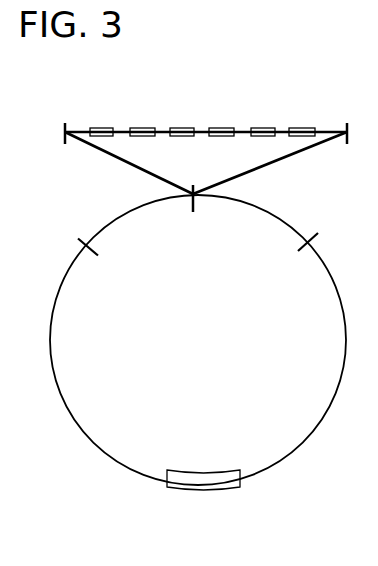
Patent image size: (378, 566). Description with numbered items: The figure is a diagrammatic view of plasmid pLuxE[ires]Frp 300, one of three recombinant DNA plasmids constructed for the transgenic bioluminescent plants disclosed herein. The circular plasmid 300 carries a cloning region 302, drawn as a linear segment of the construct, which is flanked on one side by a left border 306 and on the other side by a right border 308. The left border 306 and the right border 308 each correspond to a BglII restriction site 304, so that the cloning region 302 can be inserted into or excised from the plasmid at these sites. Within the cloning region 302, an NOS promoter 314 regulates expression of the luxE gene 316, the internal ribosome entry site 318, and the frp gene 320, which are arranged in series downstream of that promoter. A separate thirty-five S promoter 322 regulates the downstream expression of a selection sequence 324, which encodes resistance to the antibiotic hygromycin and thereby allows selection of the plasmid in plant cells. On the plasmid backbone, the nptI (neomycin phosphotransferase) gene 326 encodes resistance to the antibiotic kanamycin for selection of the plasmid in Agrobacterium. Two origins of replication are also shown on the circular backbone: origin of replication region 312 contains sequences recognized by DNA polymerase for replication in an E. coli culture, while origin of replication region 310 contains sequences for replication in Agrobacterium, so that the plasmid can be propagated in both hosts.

The plasmid pLuxE[ires]Frp 300 is at (77, 425).
The cloning region 302 is at (176, 96).
The BglII restriction site 304 is at (192, 198).
The left border 306 is at (63, 131).
The right border 308 is at (351, 127).
The origin of replication region 310 is at (88, 250).
The origin of replication region 312 is at (307, 247).
The NOS promoter 314 is at (299, 127).
The luxE gene 316 is at (260, 127).
The internal ribosome entry site 318 is at (222, 127).
The frp gene 320 is at (186, 127).
The 35S promoter 322 is at (147, 127).
The selection sequence 324 is at (103, 127).
The nptI gene 326 is at (208, 488).